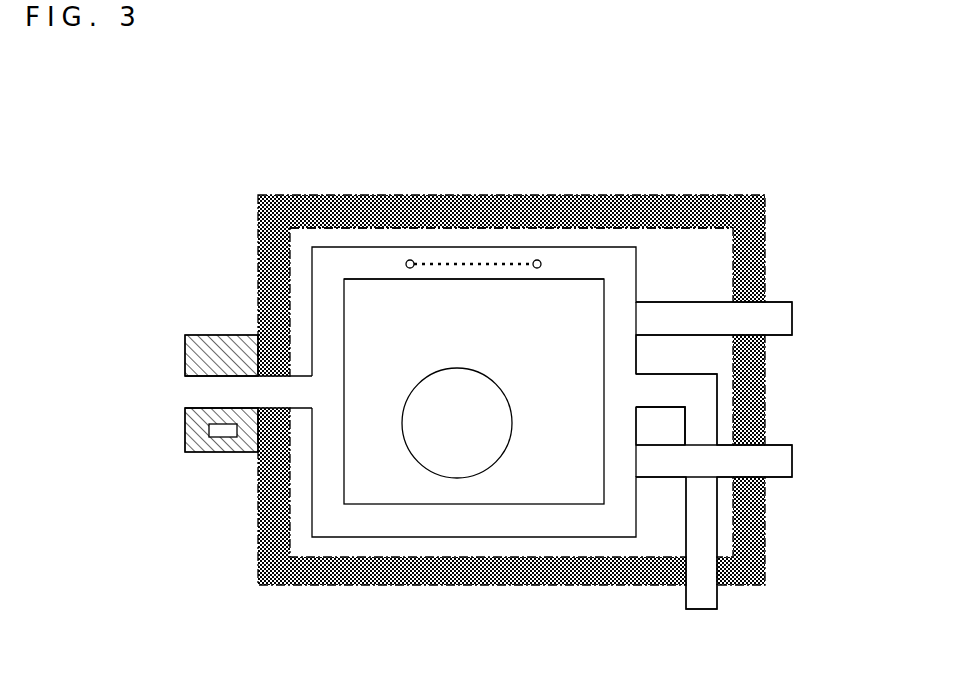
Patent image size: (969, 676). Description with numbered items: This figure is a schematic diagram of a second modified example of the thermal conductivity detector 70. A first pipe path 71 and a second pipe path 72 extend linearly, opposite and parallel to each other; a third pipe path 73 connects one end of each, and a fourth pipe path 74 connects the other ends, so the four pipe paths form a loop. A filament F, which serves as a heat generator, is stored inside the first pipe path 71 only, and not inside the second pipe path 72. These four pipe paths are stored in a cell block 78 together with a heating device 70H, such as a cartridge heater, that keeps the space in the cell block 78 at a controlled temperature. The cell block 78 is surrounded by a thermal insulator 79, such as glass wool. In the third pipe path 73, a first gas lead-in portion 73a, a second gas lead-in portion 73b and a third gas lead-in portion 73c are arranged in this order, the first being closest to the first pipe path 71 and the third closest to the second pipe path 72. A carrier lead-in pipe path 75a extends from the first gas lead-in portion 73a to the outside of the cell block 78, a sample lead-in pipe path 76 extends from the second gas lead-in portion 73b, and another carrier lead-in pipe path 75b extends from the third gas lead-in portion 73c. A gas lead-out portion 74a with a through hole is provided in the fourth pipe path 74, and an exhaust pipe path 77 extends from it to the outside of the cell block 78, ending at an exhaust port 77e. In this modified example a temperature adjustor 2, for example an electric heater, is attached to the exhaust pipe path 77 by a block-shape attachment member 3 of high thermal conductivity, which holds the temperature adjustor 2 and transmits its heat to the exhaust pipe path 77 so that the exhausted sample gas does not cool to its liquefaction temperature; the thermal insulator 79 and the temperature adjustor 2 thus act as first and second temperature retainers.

The thermal conductivity detector 70 is at (294, 170).
The heating device 70H is at (482, 440).
The first pipe path 71 is at (406, 282).
The second pipe path 72 is at (443, 538).
The third pipe path 73 is at (604, 384).
The first gas lead-in portion 73a is at (636, 318).
The second gas lead-in portion 73b is at (622, 403).
The third gas lead-in portion 73c is at (624, 462).
The fourth pipe path 74 is at (345, 325).
The gas lead-out portion 74a is at (312, 392).
The carrier lead-in pipe path 75a is at (780, 300).
The carrier lead-in pipe path 75b is at (793, 480).
The sample lead-in pipe path 76 is at (685, 542).
The exhaust pipe path 77 is at (205, 375).
The exhaust port 77e is at (185, 393).
The cell block 78 is at (697, 225).
The thermal insulator 79 is at (612, 207).
The attachment member 3 is at (222, 335).
The temperature adjustor 2 is at (222, 436).
The filament F is at (430, 257).